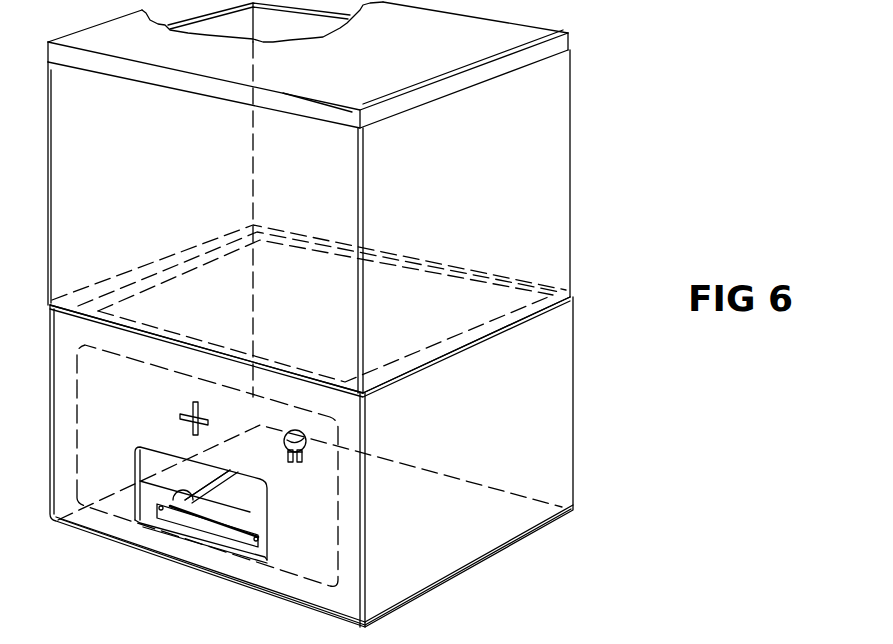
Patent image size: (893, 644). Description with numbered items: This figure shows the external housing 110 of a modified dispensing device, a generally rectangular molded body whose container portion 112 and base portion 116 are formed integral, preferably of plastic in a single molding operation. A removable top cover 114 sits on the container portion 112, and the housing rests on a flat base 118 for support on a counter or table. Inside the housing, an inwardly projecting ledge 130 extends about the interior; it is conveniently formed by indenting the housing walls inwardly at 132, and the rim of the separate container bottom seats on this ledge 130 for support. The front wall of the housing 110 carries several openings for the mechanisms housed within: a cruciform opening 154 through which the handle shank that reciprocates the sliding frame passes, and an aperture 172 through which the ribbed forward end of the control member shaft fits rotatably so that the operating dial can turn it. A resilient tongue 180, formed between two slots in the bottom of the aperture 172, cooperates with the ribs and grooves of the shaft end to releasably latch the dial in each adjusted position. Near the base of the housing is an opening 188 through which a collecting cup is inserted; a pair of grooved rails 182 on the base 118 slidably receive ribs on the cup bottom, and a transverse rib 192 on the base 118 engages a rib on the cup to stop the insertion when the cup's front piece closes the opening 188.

The external housing 110 is at (573, 217).
The container portion 112 is at (562, 125).
The removable top cover 114 is at (413, 56).
The base portion 116 is at (566, 451).
The flat base 118 is at (447, 552).
The inwardly projecting ledge 130 is at (462, 345).
The inward indentation 132 is at (411, 372).
The cruciform opening 154 is at (181, 418).
The aperture 172 is at (296, 430).
The resilient tongue 180 is at (302, 463).
The grooved rails 182 is at (258, 535).
The opening 188 is at (142, 465).
The transverse rib 192 is at (200, 518).